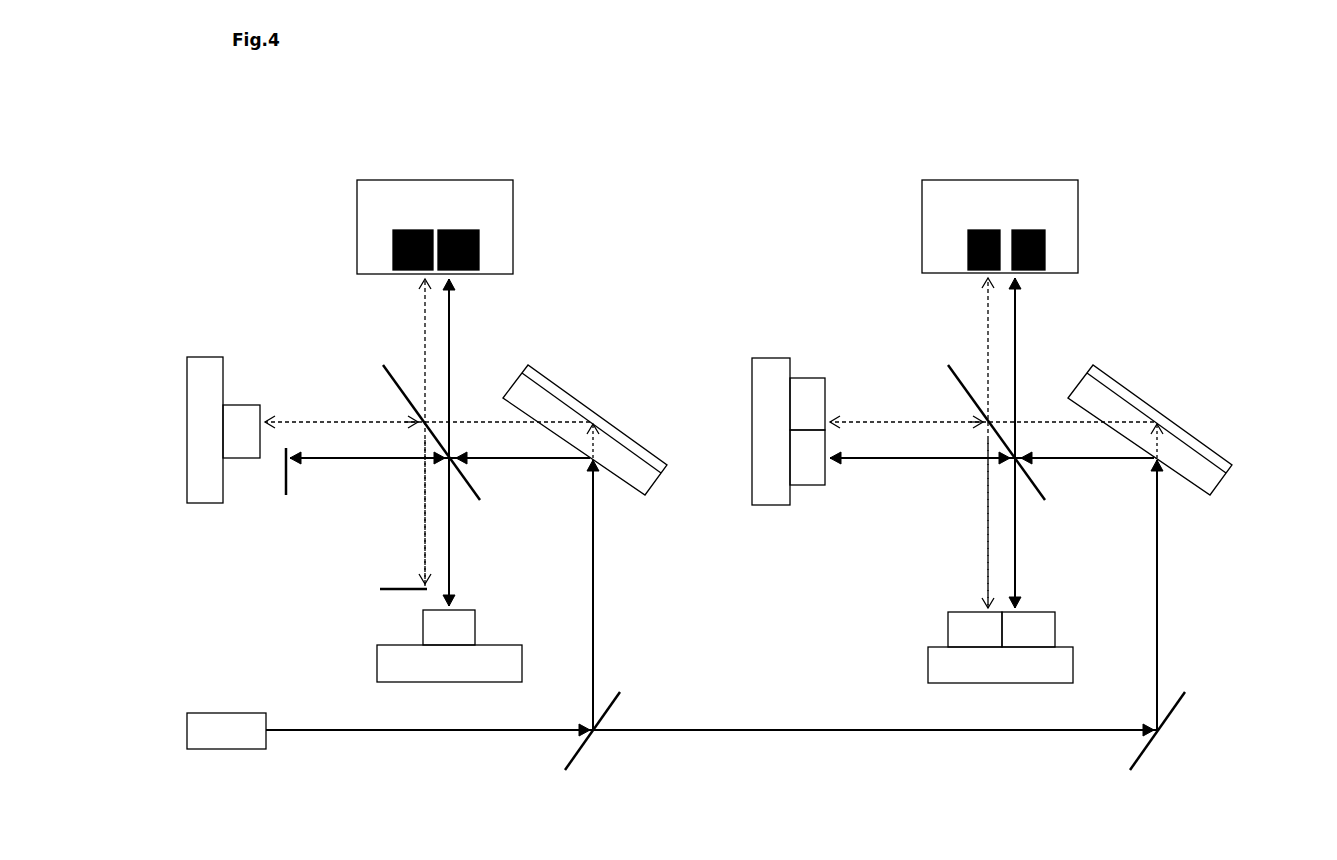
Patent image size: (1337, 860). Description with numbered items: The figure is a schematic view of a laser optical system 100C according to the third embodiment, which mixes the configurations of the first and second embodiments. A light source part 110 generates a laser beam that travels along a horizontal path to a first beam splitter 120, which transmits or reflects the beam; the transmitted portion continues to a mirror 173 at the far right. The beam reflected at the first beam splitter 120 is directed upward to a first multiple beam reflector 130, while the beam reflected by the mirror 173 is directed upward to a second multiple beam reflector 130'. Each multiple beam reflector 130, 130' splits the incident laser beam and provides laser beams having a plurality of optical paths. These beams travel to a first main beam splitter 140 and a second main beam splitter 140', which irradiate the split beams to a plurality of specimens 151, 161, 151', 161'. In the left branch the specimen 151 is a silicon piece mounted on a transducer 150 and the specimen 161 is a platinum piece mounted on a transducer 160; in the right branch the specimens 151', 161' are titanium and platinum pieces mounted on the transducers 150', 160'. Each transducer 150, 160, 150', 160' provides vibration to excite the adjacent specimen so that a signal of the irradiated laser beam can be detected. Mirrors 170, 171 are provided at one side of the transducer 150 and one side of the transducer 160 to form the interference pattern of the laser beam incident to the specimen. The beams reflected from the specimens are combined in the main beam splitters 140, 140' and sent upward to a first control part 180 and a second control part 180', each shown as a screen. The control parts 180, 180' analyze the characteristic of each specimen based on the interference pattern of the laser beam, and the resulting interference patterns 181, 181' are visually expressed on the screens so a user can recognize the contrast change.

The optical measurement system 100C is at (242, 176).
The light source part 110 is at (227, 713).
The first beam splitter 120 is at (614, 702).
The first multiple beam reflector 130 is at (616, 443).
The second multiple beam reflector 130' is at (1183, 443).
The first main beam splitter 140 is at (444, 442).
The second main beam splitter 140' is at (1008, 442).
The first transducer 150 is at (205, 403).
The first transducer of second branch 150' is at (770, 405).
The specimen 151 is at (241, 404).
The specimen 151' is at (806, 404).
The second transducer 160 is at (483, 663).
The second transducer of second branch 160' is at (1036, 665).
The specimen 161 is at (483, 627).
The specimen 161' is at (1036, 629).
The mirror 170 is at (284, 490).
The mirror 171 is at (400, 594).
The mirror 173 is at (1178, 702).
The first control part 180 is at (473, 227).
The second control part 180' is at (1041, 226).
The interference pattern 181 is at (491, 250).
The interference pattern 181' is at (1064, 250).